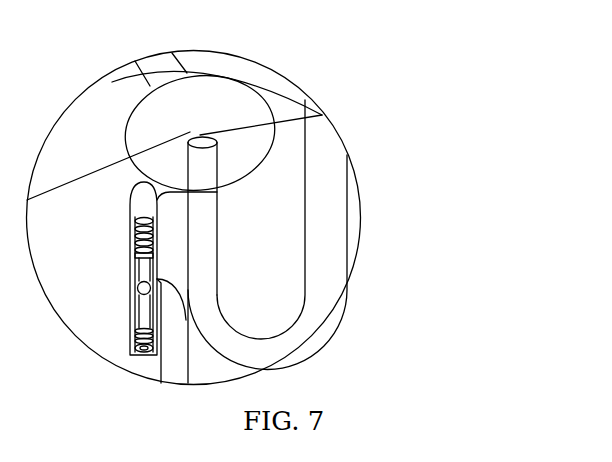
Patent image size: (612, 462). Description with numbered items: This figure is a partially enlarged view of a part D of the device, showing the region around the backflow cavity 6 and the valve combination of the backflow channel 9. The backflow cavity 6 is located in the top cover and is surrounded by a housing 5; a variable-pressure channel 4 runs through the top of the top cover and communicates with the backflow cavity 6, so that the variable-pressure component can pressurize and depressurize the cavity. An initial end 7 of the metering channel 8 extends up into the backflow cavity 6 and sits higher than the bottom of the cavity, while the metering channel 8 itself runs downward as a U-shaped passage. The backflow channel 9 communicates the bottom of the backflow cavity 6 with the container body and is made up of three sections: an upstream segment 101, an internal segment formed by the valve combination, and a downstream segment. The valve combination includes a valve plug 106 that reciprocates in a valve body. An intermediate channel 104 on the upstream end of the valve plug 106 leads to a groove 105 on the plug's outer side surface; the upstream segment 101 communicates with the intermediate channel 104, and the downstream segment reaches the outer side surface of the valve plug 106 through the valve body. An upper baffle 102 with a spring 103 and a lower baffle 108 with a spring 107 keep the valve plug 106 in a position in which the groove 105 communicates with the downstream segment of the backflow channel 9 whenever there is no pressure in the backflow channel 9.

The variable-pressure channel 4 is at (157, 72).
The housing 5 is at (220, 73).
The backflow cavity 6 is at (140, 127).
The initial end 7 is at (197, 138).
The metering channel 8 is at (205, 283).
The backflow channel 9 is at (175, 378).
The upstream segment 101 is at (138, 203).
The upper baffle 102 is at (142, 222).
The spring 103 is at (137, 240).
The intermediate channel 104 is at (145, 272).
The groove 105 is at (137, 285).
The valve plug 106 is at (145, 313).
The spring 107 is at (134, 335).
The lower baffle 108 is at (134, 349).
The part D is at (335, 305).